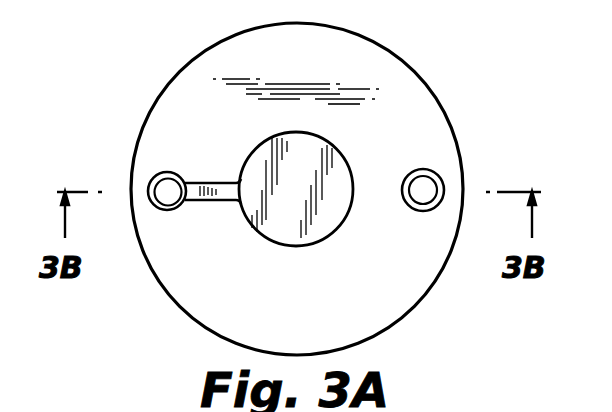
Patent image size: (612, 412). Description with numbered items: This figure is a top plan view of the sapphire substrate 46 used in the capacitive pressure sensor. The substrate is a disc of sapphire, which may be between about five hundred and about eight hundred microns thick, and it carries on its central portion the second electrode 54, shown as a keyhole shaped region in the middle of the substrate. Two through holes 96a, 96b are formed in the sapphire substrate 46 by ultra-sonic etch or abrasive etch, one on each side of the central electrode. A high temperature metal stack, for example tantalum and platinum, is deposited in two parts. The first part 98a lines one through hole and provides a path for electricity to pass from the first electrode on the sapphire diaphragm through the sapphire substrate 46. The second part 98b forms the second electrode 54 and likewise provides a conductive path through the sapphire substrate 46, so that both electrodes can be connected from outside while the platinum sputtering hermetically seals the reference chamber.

The sapphire substrate 46 is at (148, 76).
The second electrode 54 is at (184, 182).
The through hole 96a is at (418, 178).
The through hole 96b is at (167, 190).
The first part of metal stack 98a is at (420, 189).
The second part of metal stack 98b is at (165, 205).